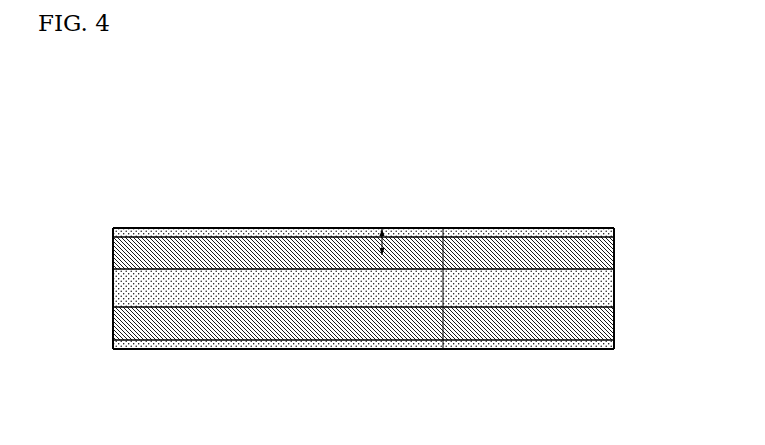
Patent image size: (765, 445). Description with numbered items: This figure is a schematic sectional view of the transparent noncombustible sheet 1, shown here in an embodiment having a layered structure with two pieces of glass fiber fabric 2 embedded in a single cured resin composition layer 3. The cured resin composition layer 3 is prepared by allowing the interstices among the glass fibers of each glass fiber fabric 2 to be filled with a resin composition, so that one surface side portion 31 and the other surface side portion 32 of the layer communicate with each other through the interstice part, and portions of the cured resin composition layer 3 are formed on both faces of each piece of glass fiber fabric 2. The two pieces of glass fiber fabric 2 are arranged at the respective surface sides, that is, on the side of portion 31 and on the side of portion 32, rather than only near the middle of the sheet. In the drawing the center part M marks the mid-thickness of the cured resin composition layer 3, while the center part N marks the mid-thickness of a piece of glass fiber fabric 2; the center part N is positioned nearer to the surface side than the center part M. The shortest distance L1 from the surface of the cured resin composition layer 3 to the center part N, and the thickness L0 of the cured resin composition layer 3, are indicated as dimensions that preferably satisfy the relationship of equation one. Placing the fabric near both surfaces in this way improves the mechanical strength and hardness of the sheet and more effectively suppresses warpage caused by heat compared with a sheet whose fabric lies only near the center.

The transparent noncombustible sheet 1 is at (410, 261).
The glass fiber fabric 2 is at (614, 250).
The cured resin composition layer 3 is at (614, 232).
The one surface side portion 31 is at (552, 228).
The other surface side portion 32 is at (560, 350).
The center part in the thickness direction of the cured resin composition layer M is at (350, 290).
The center part in the thickness direction of the glass fiber fabric N is at (354, 251).
The shortest distance from the surface to the center part of the glass fiber fabric L1 is at (410, 230).
The thickness of the cured resin composition layer L0 is at (445, 256).